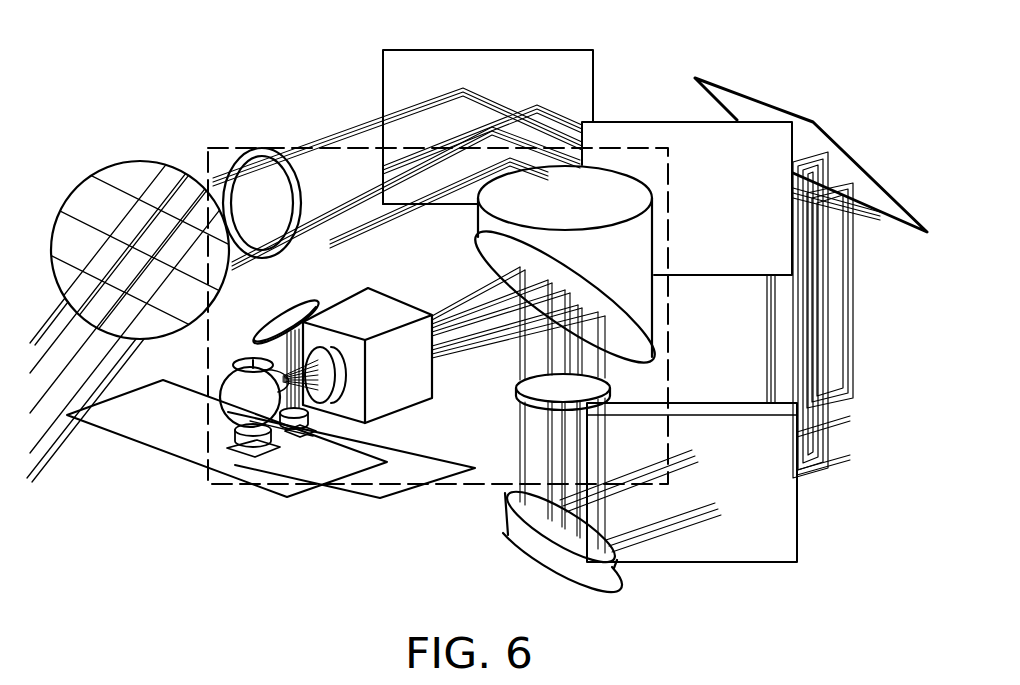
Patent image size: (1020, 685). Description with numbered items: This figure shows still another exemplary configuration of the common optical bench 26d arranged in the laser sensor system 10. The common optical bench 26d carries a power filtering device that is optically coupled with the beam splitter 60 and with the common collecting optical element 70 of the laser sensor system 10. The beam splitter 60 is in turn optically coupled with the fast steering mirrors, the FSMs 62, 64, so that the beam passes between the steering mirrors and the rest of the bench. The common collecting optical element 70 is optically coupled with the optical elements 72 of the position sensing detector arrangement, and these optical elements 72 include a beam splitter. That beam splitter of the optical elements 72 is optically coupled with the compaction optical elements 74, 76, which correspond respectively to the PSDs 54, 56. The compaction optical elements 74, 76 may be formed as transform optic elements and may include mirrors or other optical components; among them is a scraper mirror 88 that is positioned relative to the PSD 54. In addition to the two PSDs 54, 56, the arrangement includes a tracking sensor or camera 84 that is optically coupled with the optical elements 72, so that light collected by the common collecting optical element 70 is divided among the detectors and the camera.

The laser sensor system 10 is at (136, 78).
The common optical bench 26d is at (252, 147).
The PSD 54 is at (287, 493).
The PSD 56 is at (380, 492).
The beam splitter 60 is at (553, 533).
The FSM 62 is at (112, 175).
The FSM 64 is at (163, 254).
The common collecting optical element 70 is at (596, 190).
The optical elements 72 is at (366, 310).
The compaction optical element 74 is at (243, 412).
The compaction optical element 76 is at (262, 330).
The tracking sensor or camera 84 is at (520, 394).
The scraper mirror 88 is at (240, 366).